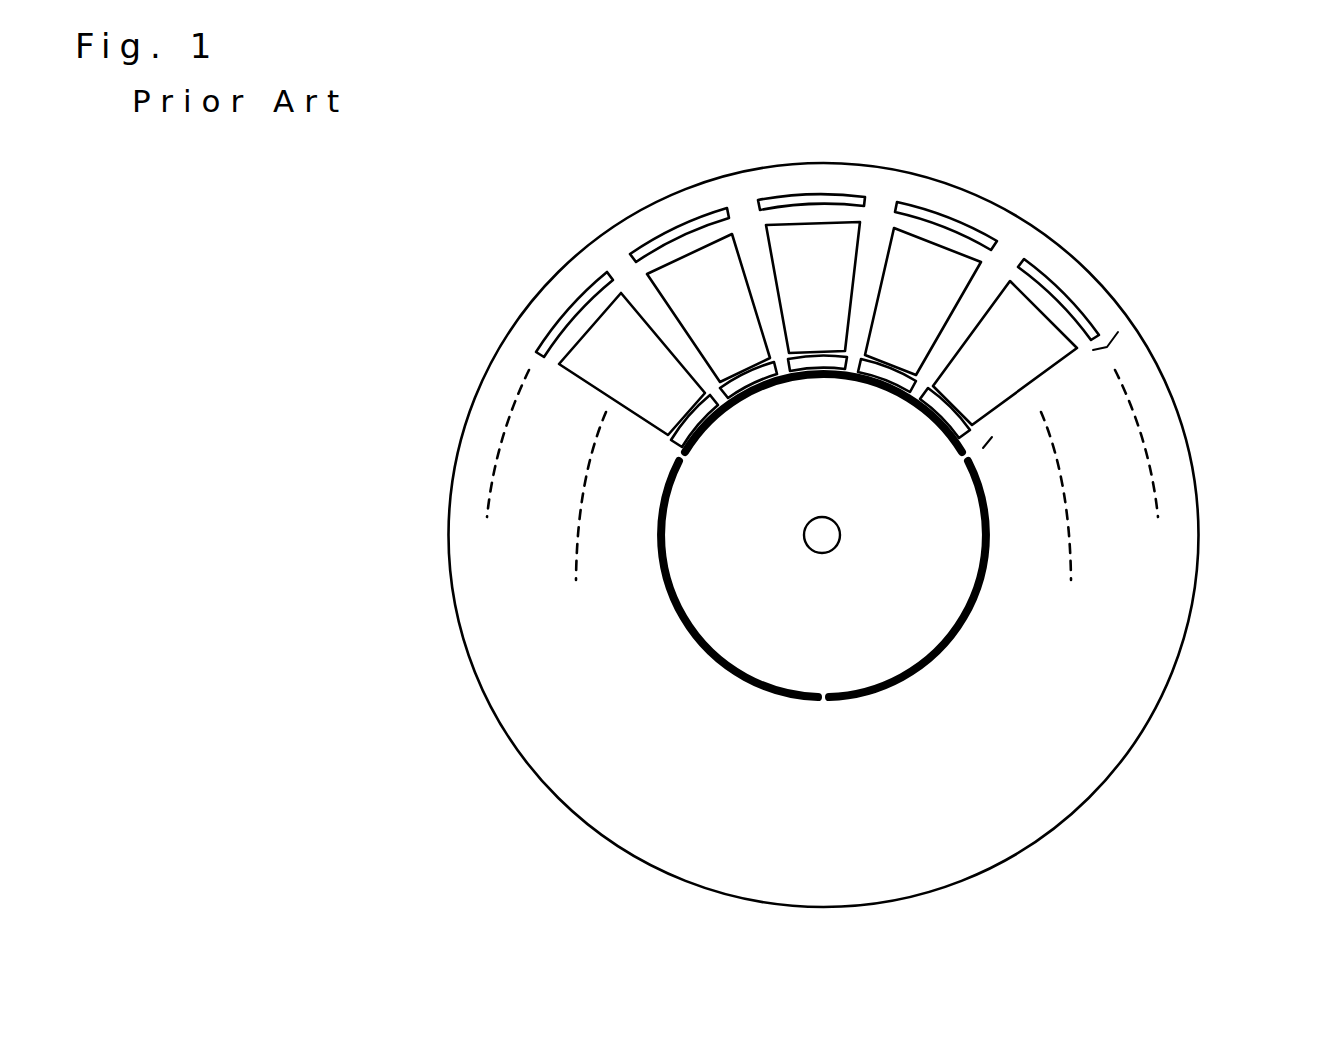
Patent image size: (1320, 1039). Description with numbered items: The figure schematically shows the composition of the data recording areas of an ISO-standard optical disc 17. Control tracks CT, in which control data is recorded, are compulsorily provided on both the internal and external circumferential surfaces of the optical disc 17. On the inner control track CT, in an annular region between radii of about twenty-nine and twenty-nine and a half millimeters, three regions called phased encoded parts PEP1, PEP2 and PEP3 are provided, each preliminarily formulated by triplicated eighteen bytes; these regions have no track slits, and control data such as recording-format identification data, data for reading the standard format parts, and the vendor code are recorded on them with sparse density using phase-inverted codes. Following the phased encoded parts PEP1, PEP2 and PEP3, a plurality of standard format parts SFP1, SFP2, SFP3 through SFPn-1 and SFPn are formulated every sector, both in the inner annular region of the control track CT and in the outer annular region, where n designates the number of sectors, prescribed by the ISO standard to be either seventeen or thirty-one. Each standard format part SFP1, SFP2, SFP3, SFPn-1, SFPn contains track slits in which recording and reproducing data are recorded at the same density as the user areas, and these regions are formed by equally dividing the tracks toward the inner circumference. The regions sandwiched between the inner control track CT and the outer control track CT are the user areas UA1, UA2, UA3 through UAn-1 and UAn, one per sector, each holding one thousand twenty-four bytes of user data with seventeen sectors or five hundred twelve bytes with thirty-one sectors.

The optical disc 17 is at (1198, 492).
The user area UA1 is at (784, 235).
The user area UA2 is at (958, 272).
The user area UA3 is at (1048, 342).
The user area UAn is at (719, 265).
The user area UAn-1 is at (600, 362).
The standard format part SFP1 is at (826, 363).
The standard format part SFP2 is at (953, 215).
The standard format part SFP3 is at (1050, 325).
The standard format part SFPn is at (670, 255).
The standard format part SFPn-1 is at (545, 318).
The phased encoded part PEP1 is at (720, 407).
The phased encoded part PEP2 is at (973, 612).
The phased encoded part PEP3 is at (676, 614).
The control track CT is at (983, 448).